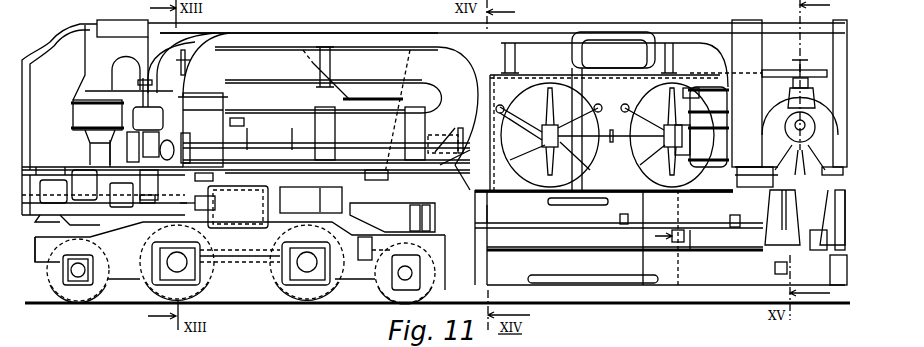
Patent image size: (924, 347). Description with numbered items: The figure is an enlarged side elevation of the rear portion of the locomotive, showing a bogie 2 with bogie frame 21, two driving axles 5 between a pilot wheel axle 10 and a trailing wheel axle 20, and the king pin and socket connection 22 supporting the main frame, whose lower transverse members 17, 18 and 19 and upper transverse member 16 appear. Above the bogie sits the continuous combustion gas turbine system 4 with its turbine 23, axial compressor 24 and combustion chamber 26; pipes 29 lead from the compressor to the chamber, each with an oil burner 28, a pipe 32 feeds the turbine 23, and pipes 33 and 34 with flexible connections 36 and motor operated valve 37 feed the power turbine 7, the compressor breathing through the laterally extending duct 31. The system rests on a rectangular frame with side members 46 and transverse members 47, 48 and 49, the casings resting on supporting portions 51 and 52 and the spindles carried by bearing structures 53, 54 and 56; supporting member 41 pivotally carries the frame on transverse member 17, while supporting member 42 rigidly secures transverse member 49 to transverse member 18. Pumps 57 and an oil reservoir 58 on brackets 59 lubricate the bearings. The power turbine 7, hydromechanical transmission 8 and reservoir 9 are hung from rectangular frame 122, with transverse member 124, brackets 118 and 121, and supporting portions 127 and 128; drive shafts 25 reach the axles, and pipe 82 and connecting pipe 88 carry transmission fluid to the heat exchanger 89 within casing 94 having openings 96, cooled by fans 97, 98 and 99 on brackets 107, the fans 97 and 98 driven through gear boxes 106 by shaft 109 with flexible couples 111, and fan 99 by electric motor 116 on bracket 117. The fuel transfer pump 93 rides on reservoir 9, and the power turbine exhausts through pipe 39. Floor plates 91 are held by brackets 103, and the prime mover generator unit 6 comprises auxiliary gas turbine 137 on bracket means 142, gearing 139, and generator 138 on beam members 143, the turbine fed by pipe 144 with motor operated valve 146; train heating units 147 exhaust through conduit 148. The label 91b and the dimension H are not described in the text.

The conduit 148 is at (118, 20).
The pipe 144 is at (218, 32).
The motor operated valve 146 is at (150, 60).
The oil burner 28 is at (190, 62).
The train heating unit 147 is at (76, 96).
The auxiliary gas turbine 137 is at (135, 117).
The bearing structure 53 is at (190, 135).
The bracket 103 is at (38, 165).
The floor plate 91 is at (67, 167).
The prime mover generator unit 6 is at (113, 153).
The bracket means 142 is at (140, 167).
The gearing 139 is at (152, 195).
The lower spacing and reinforcing member 17 is at (182, 207).
The transverse member 47 is at (230, 177).
The supporting member 41 is at (205, 203).
The longitudinal beam member 143 is at (41, 223).
The generator 138 is at (80, 223).
The bogie frame 21 is at (36, 245).
The trailing wheel axle 20 is at (78, 276).
The driving axle 5 is at (177, 272).
The pilot wheel axle 10 is at (405, 280).
The bogie 2 is at (262, 278).
The drive shaft 25 is at (250, 258).
The oil reservoir 58 is at (358, 237).
The bracket 59 is at (365, 227).
The king pin and socket connection 22 is at (250, 202).
The duct 31 is at (311, 200).
The transverse member 48 is at (328, 200).
The pump 57 is at (376, 176).
The combustion chamber 26 is at (262, 64).
The flexible connection 36 is at (332, 60).
The pipe 33 is at (468, 70).
The continuous combustion gas turbine system 4 is at (318, 97).
The axial compressor 24 is at (278, 110).
The turbine 23 is at (395, 108).
The pipe 29 is at (236, 122).
The supporting portion 52 is at (245, 139).
The side member 46 is at (291, 139).
The bearing structure 54 is at (340, 135).
The supporting portion 51 is at (378, 150).
The bearing structure 56 is at (447, 136).
The pipe 32 is at (458, 138).
The transverse member 49 is at (461, 157).
The supporting member 42 is at (473, 185).
The lower spacing and reinforcing member 18 is at (487, 214).
The bracket 107 is at (612, 101).
The supporting portion 128 is at (616, 215).
The depending bracket 118 is at (490, 237).
The rectangular frame 122 is at (580, 242).
The transverse member 124 is at (492, 250).
The pipe 82 is at (592, 277).
The hydromechanical transmission 8 is at (507, 285).
The pipe 34 is at (565, 48).
The connecting pipe 88 is at (620, 32).
The heat exchanger 89 is at (614, 72).
The casing 94 is at (683, 92).
The transverse opening 96 is at (522, 102).
The gear box 106 is at (542, 136).
The shaft 109 is at (660, 140).
The flexible couple 111 is at (611, 141).
The fan 97 is at (518, 160).
The fan 98 is at (660, 158).
The plate 91b is at (622, 190).
The motor operated valve 37 is at (714, 146).
The pipe 39 is at (748, 22).
The upper spacing and reinforcing member 16 is at (802, 62).
The bracket 117 is at (792, 90).
The electric motor 116 is at (810, 125).
The fan 99 is at (785, 150).
The power turbine 7 is at (708, 208).
The supporting portion 127 is at (732, 228).
The depending bracket 121 is at (782, 205).
The lower spacing and reinforcing member 19 is at (818, 202).
The transmission fluid reservoir 9 is at (732, 282).
The fuel transfer pump 93 is at (778, 274).
The height H is at (661, 236).